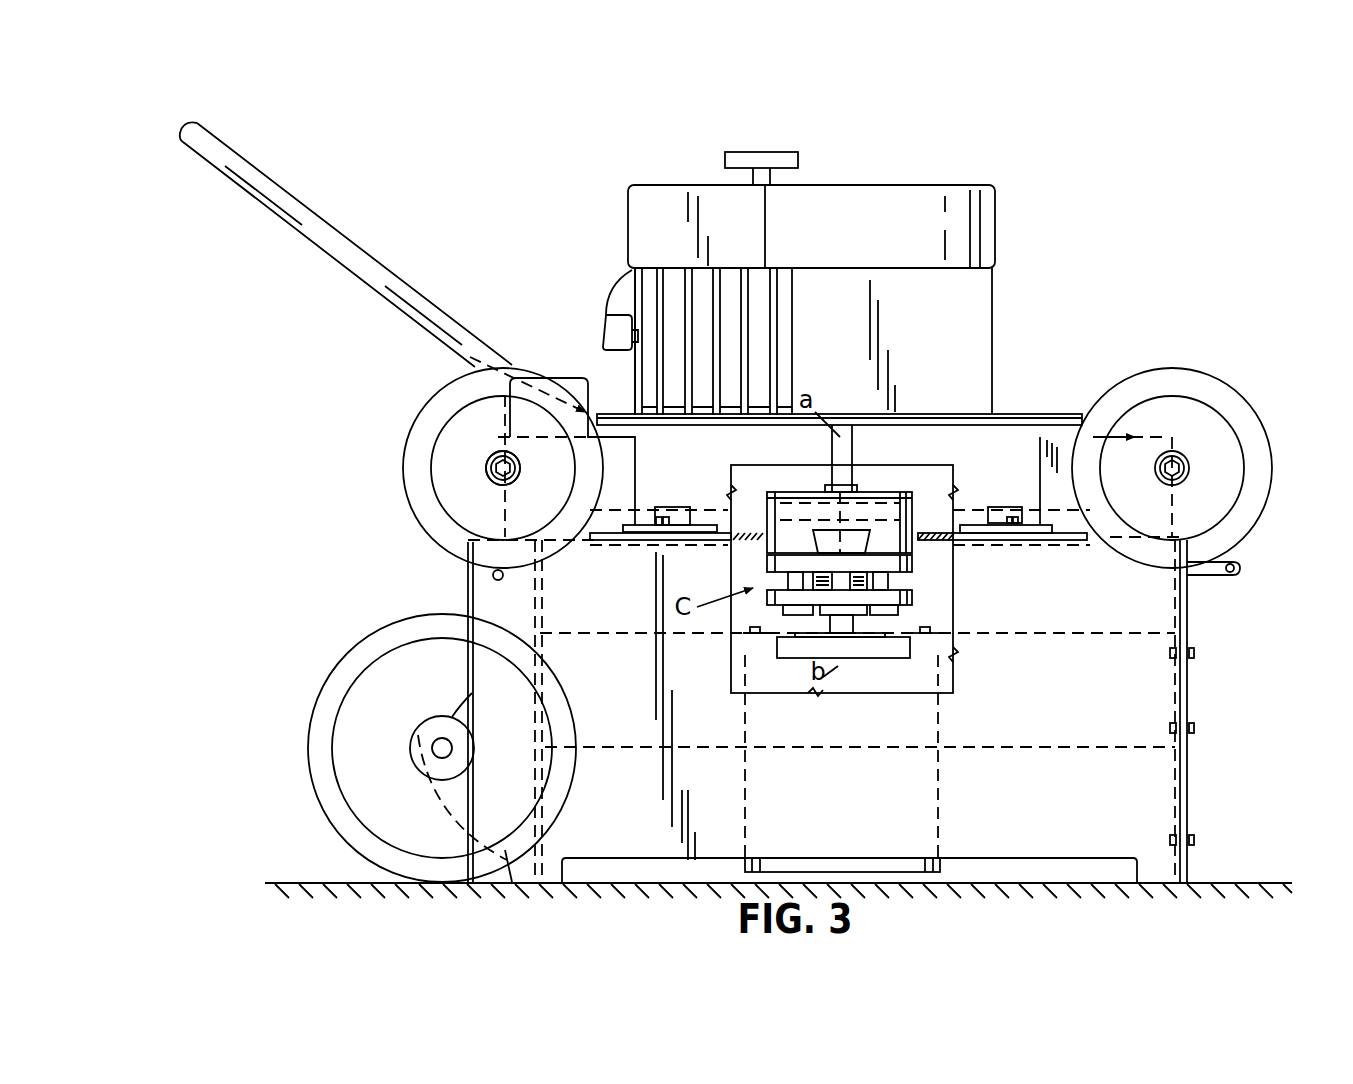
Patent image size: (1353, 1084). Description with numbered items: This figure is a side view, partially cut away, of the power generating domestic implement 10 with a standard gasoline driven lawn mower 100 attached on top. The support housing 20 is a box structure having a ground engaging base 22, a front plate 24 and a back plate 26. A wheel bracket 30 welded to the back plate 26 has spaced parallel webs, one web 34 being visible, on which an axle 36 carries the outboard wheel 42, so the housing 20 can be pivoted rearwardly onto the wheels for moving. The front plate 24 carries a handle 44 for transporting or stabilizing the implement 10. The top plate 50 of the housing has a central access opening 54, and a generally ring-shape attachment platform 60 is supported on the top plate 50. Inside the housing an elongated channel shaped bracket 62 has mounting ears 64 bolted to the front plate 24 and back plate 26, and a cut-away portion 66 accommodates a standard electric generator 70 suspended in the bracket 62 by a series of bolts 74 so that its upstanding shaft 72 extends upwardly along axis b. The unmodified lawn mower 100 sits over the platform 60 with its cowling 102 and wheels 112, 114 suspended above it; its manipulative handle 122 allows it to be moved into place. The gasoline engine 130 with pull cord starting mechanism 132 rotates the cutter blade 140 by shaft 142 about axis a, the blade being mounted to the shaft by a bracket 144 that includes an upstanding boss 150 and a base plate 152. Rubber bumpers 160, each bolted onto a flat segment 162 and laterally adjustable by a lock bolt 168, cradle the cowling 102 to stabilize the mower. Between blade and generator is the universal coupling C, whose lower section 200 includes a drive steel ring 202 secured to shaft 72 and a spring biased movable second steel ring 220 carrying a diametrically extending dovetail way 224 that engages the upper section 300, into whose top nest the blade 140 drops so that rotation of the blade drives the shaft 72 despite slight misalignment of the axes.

The domestic implement 10 is at (1203, 622).
The support housing 20 is at (1188, 600).
The ground engaging base 22 is at (1158, 872).
The front plate 24 is at (1187, 702).
The back plate 26 is at (530, 600).
The wheel bracket 30 is at (468, 572).
The web 34 is at (425, 722).
The axle 36 is at (440, 755).
The outboard wheel 42 is at (328, 673).
The handle 44 is at (1240, 566).
The top plate 50 is at (935, 540).
The central access opening 54 is at (920, 547).
The attachment platform 60 is at (1047, 540).
The channel shaped bracket 62 is at (945, 633).
The mounting ear 64 is at (1177, 678).
The cut-away portion 66 is at (888, 658).
The electric generator 70 is at (940, 733).
The upstanding shaft 72 is at (843, 630).
The bolt 74 is at (750, 637).
The gasoline driven lawn mower 100 is at (1028, 333).
The cowling 102 is at (1035, 414).
The wheel 112 is at (1207, 392).
The wheel 114 is at (420, 400).
The manipulative handle 122 is at (337, 226).
The gasoline engine 130 is at (985, 212).
The pull cord starting mechanism 132 is at (797, 160).
The cutter blade 140 is at (925, 500).
The shaft 142 is at (852, 472).
The bracket 144 is at (827, 487).
The upstanding boss 150 is at (615, 540).
The base plate 152 is at (997, 537).
The rubber bumper 160 is at (680, 507).
The flat segment 162 is at (668, 533).
The lock bolt 168 is at (655, 520).
The lower section 200 is at (750, 576).
The drive steel ring 202 is at (795, 606).
The second steel ring 220 is at (763, 562).
The diametrically extending way 224 is at (862, 532).
The upper section 300 is at (762, 490).